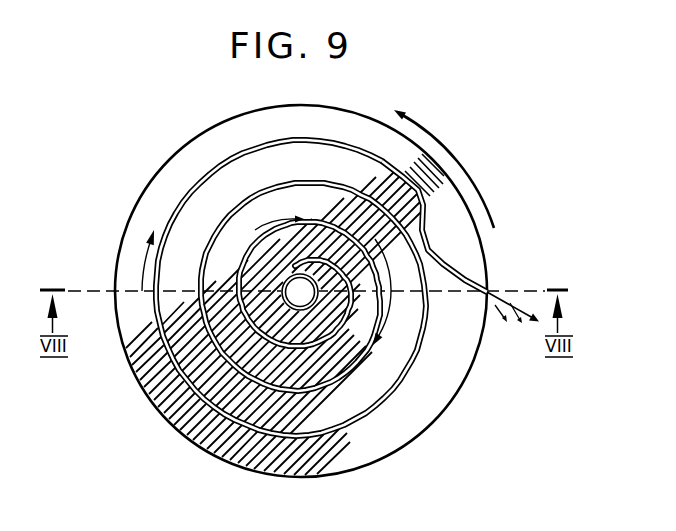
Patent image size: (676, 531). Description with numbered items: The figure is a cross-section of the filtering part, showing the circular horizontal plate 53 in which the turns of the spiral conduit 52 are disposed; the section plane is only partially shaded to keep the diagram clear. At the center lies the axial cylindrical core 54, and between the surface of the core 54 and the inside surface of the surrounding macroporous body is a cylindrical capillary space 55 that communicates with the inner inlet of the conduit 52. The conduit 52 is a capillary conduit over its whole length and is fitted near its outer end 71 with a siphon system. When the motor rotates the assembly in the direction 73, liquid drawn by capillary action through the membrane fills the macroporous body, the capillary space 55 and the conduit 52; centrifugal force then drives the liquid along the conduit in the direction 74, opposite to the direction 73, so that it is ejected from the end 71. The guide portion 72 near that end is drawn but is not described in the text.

The spiral conduit 52 is at (233, 207).
The circular horizontal plate 53 is at (328, 463).
The axial cylindrical core 54 is at (300, 292).
The cylindrical capillary space 55 is at (377, 364).
The outer end 71 is at (489, 291).
The guide wall 72 is at (427, 242).
The direction 73 is at (462, 160).
The direction 74 is at (263, 232).